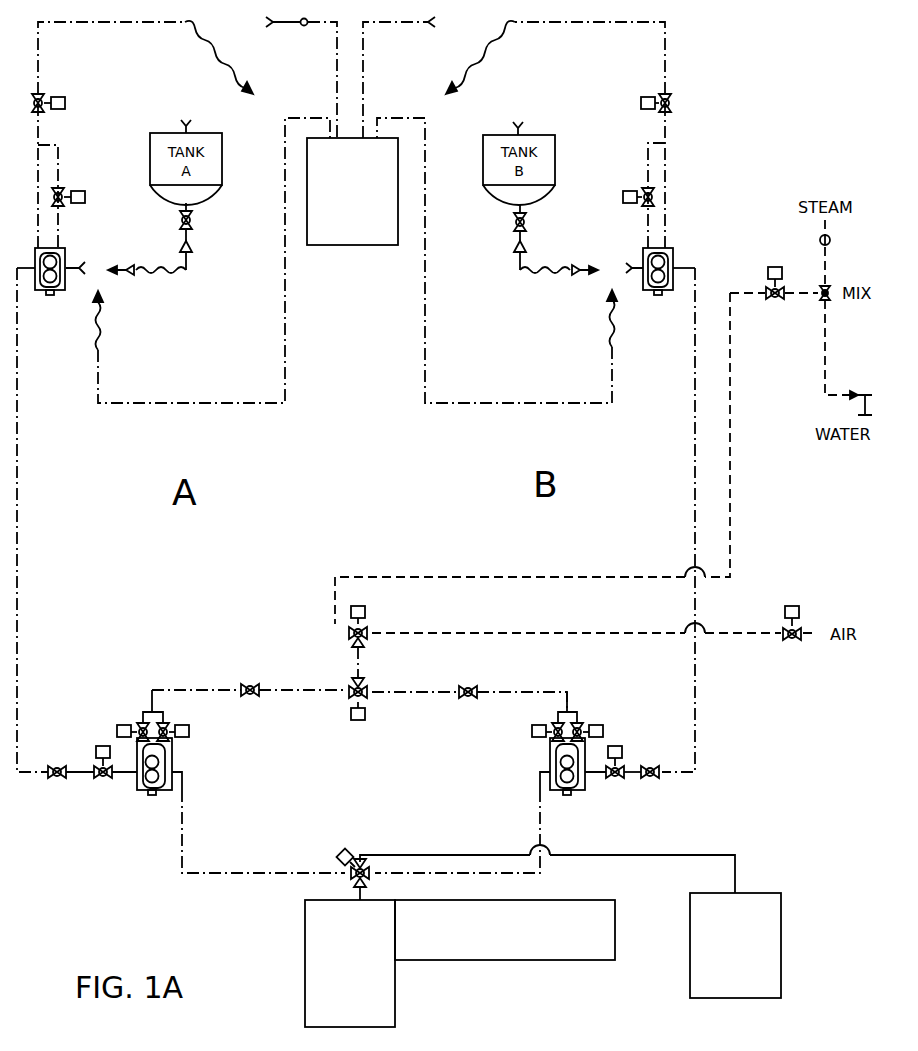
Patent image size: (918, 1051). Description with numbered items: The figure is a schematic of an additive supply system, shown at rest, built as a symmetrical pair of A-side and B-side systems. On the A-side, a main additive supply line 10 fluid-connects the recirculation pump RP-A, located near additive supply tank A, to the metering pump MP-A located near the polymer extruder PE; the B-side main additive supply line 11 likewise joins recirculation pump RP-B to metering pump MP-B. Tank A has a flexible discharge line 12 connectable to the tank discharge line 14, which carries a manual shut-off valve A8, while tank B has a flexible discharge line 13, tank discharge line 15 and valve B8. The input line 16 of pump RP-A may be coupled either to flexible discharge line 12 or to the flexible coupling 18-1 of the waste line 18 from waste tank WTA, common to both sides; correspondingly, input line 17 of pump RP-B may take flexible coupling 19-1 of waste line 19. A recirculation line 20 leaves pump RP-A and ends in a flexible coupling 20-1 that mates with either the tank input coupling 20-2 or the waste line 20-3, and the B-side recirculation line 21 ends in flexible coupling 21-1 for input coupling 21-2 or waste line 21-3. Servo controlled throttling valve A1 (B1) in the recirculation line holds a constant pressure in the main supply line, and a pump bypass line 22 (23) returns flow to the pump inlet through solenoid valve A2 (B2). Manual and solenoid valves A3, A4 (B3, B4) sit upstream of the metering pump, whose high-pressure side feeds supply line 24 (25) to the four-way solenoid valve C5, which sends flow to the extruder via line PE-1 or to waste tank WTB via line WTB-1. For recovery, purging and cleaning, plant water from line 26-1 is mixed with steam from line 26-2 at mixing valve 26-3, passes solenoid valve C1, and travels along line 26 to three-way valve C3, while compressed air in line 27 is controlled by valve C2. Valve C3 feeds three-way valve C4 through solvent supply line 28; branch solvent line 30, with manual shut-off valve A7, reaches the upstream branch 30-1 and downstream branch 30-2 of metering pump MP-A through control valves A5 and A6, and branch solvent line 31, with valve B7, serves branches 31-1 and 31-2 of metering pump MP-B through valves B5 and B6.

The main additive supply line 10 is at (19, 568).
The main additive supply line 11 is at (695, 498).
The flexible discharge line 12 is at (160, 275).
The flexible discharge line 13 is at (541, 277).
The tank discharge line 14 is at (195, 253).
The tank discharge line 15 is at (525, 245).
The input line 16 is at (80, 267).
The input line 17 is at (628, 265).
The waste line 18 is at (232, 403).
The flexible coupling 18-1 is at (104, 323).
The waste line 19 is at (532, 402).
The flexible coupling 19-1 is at (611, 331).
The recirculation line 20 is at (34, 78).
The flexible coupling 20-1 is at (223, 62).
The input coupling 20-2 is at (190, 124).
The waste line 20-3 is at (306, 25).
The recirculation line 21 is at (667, 60).
The flexible coupling 21-1 is at (491, 62).
The input coupling 21-2 is at (512, 123).
The waste line 21-3 is at (414, 24).
The pump bypass line 22 is at (56, 169).
The pump bypass line 23 is at (648, 164).
The supply line 24 is at (182, 847).
The supply line 25 is at (540, 834).
The heated solvent line 26 is at (626, 576).
The plant water line 26-1 is at (824, 359).
The steam line 26-2 is at (818, 241).
The mixing valve 26-3 is at (825, 310).
The compressed air line 27 is at (571, 635).
The solvent supply line 28 is at (358, 668).
The branch solvent line 30 is at (310, 694).
The upstream branch 30-1 is at (138, 753).
The downstream branch 30-2 is at (165, 761).
The branch solvent line 31 is at (433, 697).
The upstream branch 31-1 is at (590, 755).
The downstream branch 31-2 is at (553, 754).
The servo controlled throttling valve A1 is at (63, 103).
The solenoid actuated valve A2 is at (82, 197).
The manually operated valve A3 is at (69, 784).
The solenoid actuated valve A4 is at (114, 774).
The solenoid actuated control valve A5 is at (128, 716).
The solenoid actuated control valve A6 is at (178, 720).
The manually operated shut-off valve A7 is at (250, 702).
The manually operated shut-off valve A8 is at (203, 216).
The servo controlled throttling valve B1 is at (637, 104).
The solenoid actuated valve B2 is at (620, 198).
The manually operated valve B3 is at (642, 787).
The solenoid actuated valve B4 is at (605, 777).
The solenoid actuated control valve B5 is at (592, 719).
The solenoid actuated control valve B6 is at (539, 720).
The manually operated shut-off valve B7 is at (466, 706).
The manually operated shut-off valve B8 is at (503, 226).
The solenoid actuated valve C1 is at (774, 295).
The solenoid actuated valve C2 is at (793, 641).
The three-way solenoid actuated valve C3 is at (372, 622).
The three-way solenoid actuated valve C4 is at (377, 702).
The four-way solenoid actuated valve C5 is at (343, 857).
The recirculation pump RP-A is at (41, 286).
The recirculation pump RP-B is at (662, 286).
The metering pump MP-A is at (147, 761).
The metering pump MP-B is at (562, 762).
The waste tank A WTA is at (322, 238).
The waste tank B WTB is at (691, 903).
The waste line WTB-1 is at (651, 863).
The polymer extruder PE is at (307, 959).
The extruder feed line PE-1 is at (358, 899).